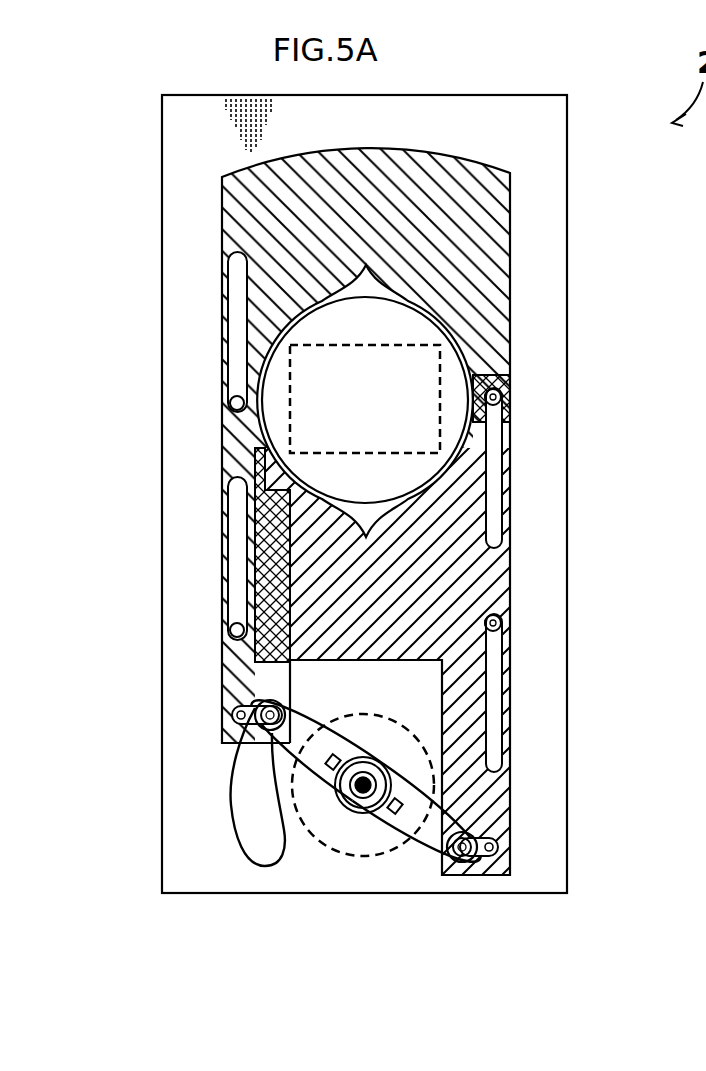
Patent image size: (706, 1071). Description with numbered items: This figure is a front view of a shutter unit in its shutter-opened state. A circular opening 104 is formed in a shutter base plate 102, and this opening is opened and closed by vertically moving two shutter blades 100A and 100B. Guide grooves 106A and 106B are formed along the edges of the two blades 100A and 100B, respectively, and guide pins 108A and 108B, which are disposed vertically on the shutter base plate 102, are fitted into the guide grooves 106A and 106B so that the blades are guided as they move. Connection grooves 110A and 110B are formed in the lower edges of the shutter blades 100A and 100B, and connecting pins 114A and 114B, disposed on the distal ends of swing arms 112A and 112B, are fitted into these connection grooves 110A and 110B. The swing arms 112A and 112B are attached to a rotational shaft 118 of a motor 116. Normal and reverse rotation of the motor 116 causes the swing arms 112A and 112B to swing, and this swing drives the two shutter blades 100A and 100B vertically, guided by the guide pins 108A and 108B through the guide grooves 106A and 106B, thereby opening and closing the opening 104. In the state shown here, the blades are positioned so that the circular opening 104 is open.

The shutter base plate 102 is at (543, 127).
The shutter blade 100A is at (504, 208).
The shutter blade 100B is at (512, 580).
The circular opening 104 is at (428, 336).
The guide groove 106A is at (232, 286).
The guide groove 106B is at (506, 440).
The guide pin 108A is at (232, 403).
The guide pin 108B is at (506, 397).
The connection groove 110A is at (233, 710).
The connection groove 110B is at (448, 835).
The swing arm 112A is at (330, 762).
The swing arm 112B is at (472, 829).
The connecting pin 114A is at (260, 700).
The connecting pin 114B is at (492, 850).
The motor 116 is at (330, 810).
The rotational shaft 118 is at (352, 786).